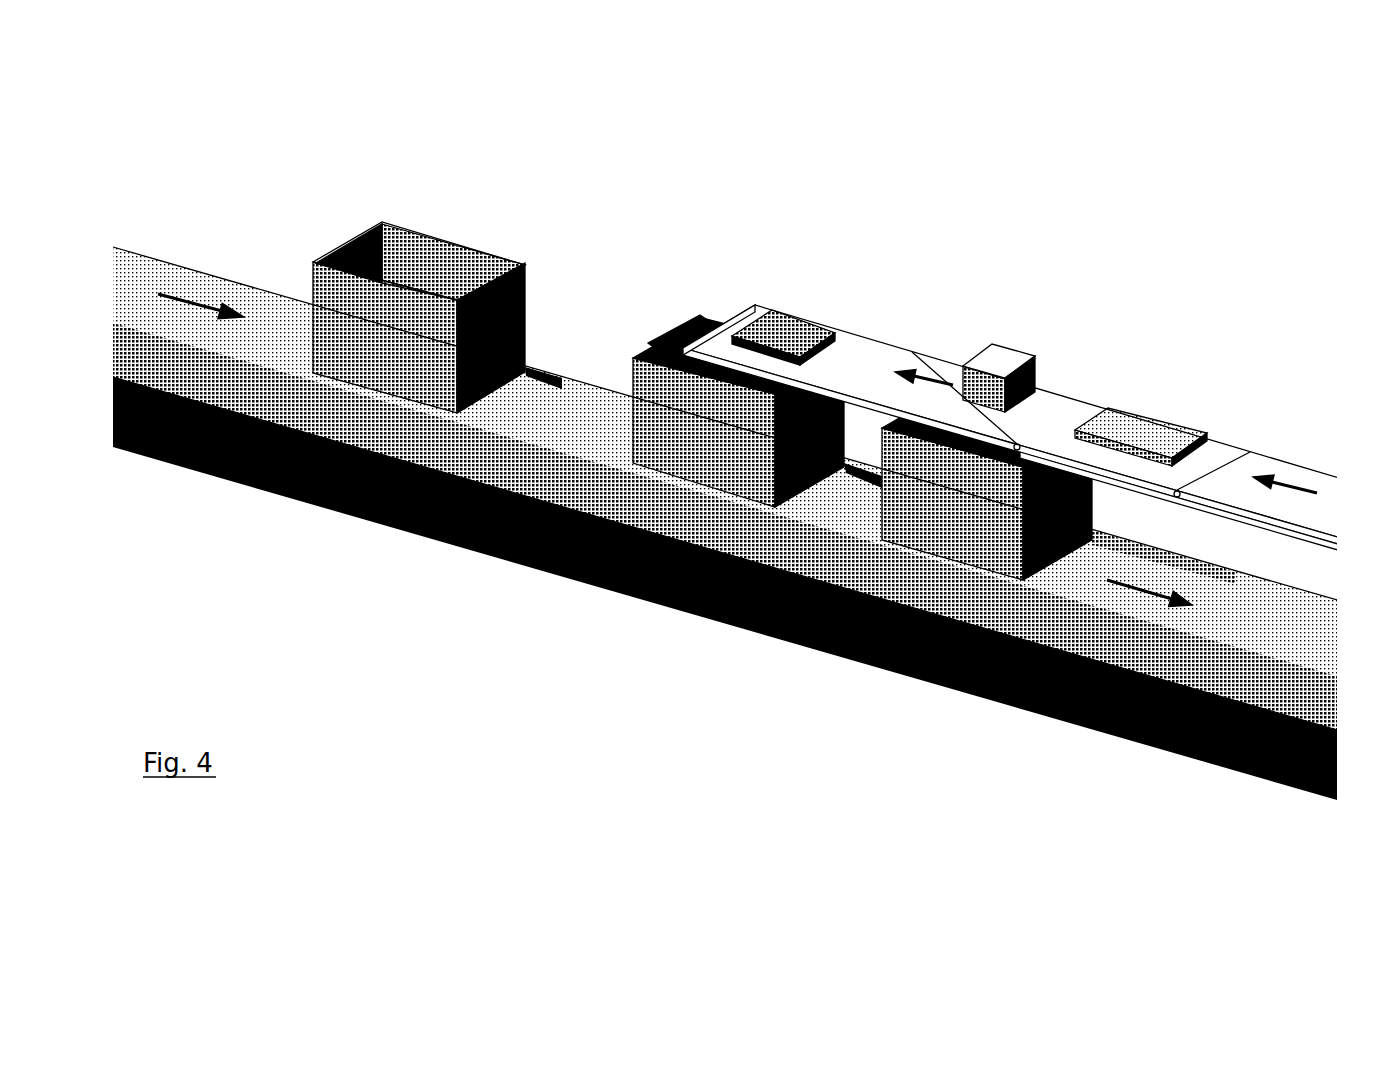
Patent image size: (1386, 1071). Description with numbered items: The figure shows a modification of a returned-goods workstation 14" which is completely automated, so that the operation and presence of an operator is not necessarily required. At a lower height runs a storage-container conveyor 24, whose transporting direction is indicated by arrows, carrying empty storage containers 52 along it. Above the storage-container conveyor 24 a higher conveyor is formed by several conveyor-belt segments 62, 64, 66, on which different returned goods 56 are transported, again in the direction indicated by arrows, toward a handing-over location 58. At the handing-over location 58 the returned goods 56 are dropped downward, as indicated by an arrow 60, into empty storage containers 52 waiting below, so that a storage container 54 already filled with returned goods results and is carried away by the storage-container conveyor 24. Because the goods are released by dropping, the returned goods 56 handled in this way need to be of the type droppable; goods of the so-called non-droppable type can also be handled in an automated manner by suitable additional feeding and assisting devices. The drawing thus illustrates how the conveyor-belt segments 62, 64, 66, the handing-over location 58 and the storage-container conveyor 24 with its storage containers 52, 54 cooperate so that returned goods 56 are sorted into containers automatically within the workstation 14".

The workstation 14 is at (1031, 92).
The storage-container conveyor 24 is at (200, 272).
The storage container 52 is at (440, 238).
The storage container 54 is at (882, 495).
The returned goods 56 is at (752, 318).
The handing-over location 58 is at (802, 258).
The arrow 60 is at (706, 316).
The conveyor-belt segment 62 is at (930, 355).
The conveyor-belt segment 64 is at (1238, 443).
The conveyor-belt segment 66 is at (1260, 520).